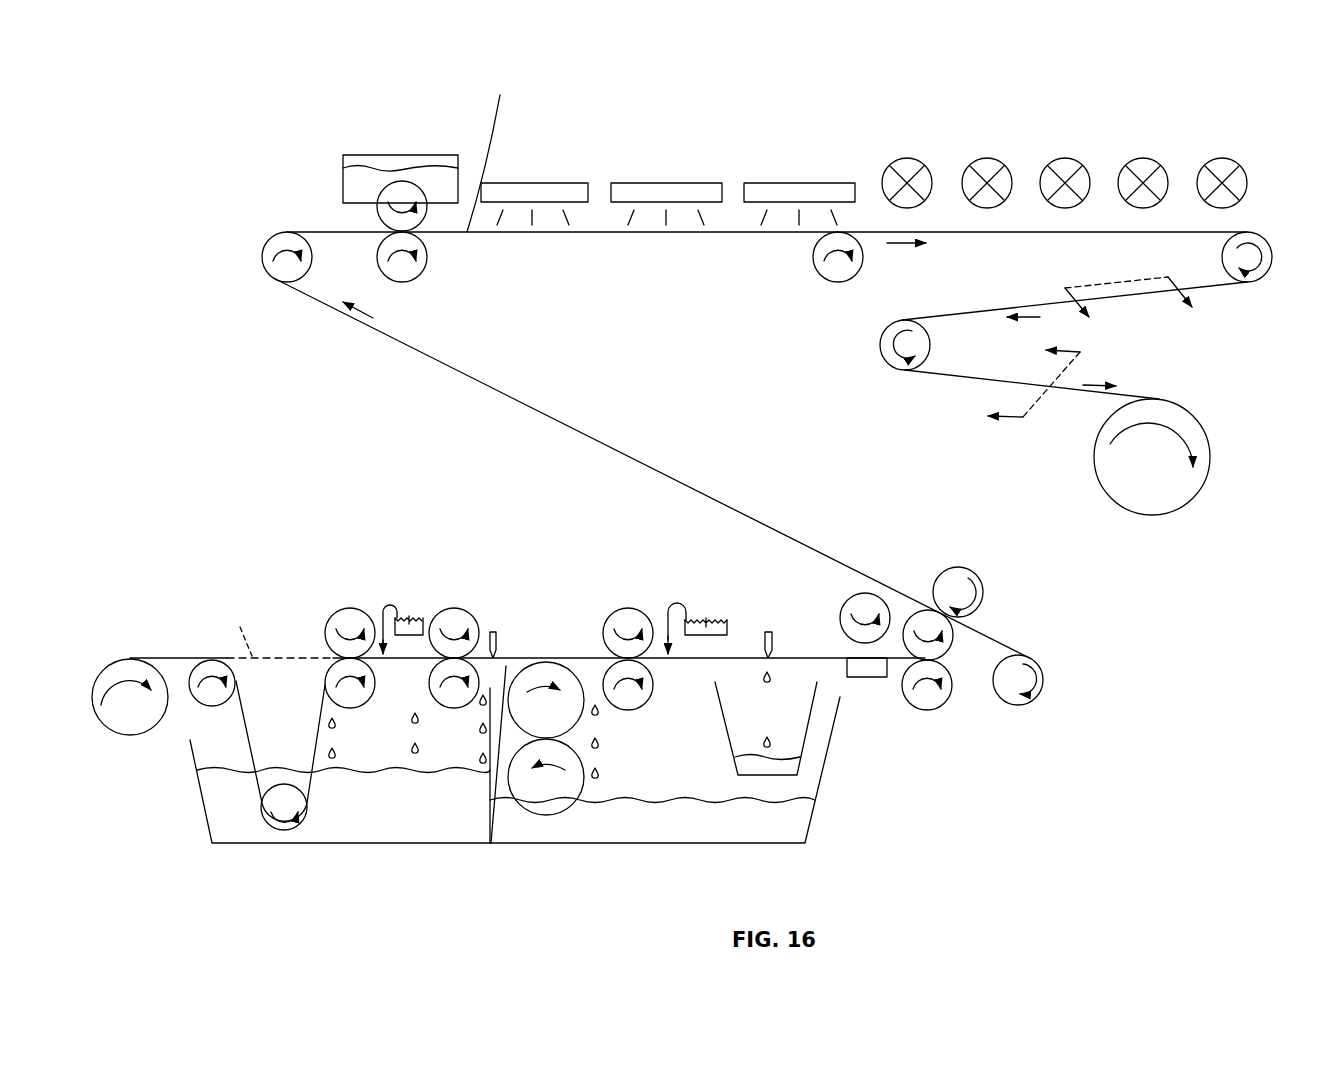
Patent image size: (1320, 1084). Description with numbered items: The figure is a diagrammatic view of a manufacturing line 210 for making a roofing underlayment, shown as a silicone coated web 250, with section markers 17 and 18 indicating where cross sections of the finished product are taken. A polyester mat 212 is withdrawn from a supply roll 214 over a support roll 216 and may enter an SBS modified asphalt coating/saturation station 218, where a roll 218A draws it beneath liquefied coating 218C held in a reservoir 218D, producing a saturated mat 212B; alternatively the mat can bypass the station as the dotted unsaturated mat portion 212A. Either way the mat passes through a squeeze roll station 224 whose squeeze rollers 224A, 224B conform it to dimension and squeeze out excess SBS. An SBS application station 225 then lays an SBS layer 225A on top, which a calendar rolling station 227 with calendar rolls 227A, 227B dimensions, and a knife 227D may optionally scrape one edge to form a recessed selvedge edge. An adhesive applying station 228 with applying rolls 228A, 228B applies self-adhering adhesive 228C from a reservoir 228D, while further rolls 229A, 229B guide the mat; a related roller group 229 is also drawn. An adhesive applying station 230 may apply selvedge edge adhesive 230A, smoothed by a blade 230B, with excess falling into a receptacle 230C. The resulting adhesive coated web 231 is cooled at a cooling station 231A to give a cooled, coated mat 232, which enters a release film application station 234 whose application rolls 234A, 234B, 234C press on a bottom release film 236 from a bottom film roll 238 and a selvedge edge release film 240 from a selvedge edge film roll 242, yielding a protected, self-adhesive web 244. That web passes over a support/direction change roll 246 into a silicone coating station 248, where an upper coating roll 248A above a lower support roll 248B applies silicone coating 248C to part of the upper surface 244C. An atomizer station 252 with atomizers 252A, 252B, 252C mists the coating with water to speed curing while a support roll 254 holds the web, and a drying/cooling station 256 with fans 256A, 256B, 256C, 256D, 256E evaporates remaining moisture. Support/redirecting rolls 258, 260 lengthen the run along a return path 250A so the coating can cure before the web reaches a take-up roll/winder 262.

The manufacturing line 210 is at (224, 102).
The polyester mat 212 is at (165, 657).
The unsaturated mat portion 212A is at (242, 627).
The saturated mat 212B is at (302, 761).
The supply roll 214 is at (130, 728).
The support roll 216 is at (213, 700).
The SBS modified asphalt coating/saturation station 218 is at (286, 619).
The roll 218A is at (257, 817).
The liquefied coating 218C is at (428, 828).
The reservoir 218D is at (205, 820).
The squeeze roll station 224 is at (354, 596).
The squeeze roller 224A is at (340, 625).
The squeeze roller 224B is at (362, 697).
The SBS application station 225 is at (408, 551).
The SBS layer 225A is at (407, 617).
The calendar rolling station 227 is at (454, 596).
The calendar roll 227A is at (462, 625).
The calendar roll 227B is at (462, 707).
The knife 227D is at (496, 643).
The adhesive applying station 228 is at (556, 612).
The applying roll 228A is at (546, 700).
The applying roll 228B is at (546, 777).
The self-adhering adhesive 228C is at (618, 830).
The reservoir 228D is at (818, 793).
The third roller pair 229 is at (647, 569).
The roll 229A is at (617, 625).
The roll 229B is at (630, 693).
The adhesive applying station 230 is at (704, 526).
The selvedge edge adhesive 230A is at (710, 622).
The blade 230B is at (765, 631).
The receptacle 230C is at (803, 747).
The adhesive coated web 231 is at (822, 658).
The cooling station 231A is at (863, 677).
The cooled, coated mat 232 is at (905, 667).
The release film application station 234 is at (987, 553).
The application roll 234A is at (975, 579).
The application roll 234B is at (918, 615).
The application roll 234C is at (943, 688).
The bottom release film 236 is at (1010, 643).
The bottom film roll 238 is at (1049, 683).
The selvedge edge release film 240 is at (893, 633).
The selvedge edge film roll 242 is at (856, 589).
The protected, self-adhesive web 244 is at (826, 552).
The upper surface 244C is at (499, 149).
The support/direction change roll 246 is at (263, 255).
The silicone coating station 248 is at (414, 138).
The upper coating roll 248A is at (405, 197).
The lower support roll 248B is at (417, 265).
The silicone coating 248C is at (350, 187).
The silicone coated web 250 is at (523, 232).
The belt return run 250A is at (1218, 288).
The atomizer station 252 is at (645, 104).
The atomizer 252A is at (553, 192).
The atomizer 252B is at (697, 192).
The atomizer 252C is at (795, 192).
The support roll 254 is at (835, 270).
The drying/cooling station 256 is at (1011, 102).
The fan 256A is at (907, 168).
The fan 256B is at (987, 168).
The fan 256C is at (1065, 168).
The fan 256D is at (1143, 168).
The fan 256E is at (1222, 168).
The support/redirecting roll 258 is at (1258, 242).
The support/redirecting roll 260 is at (921, 347).
The take-up roll/winder 262 is at (1178, 418).
The section line 17 is at (1141, 315).
The section line 18 is at (1016, 381).